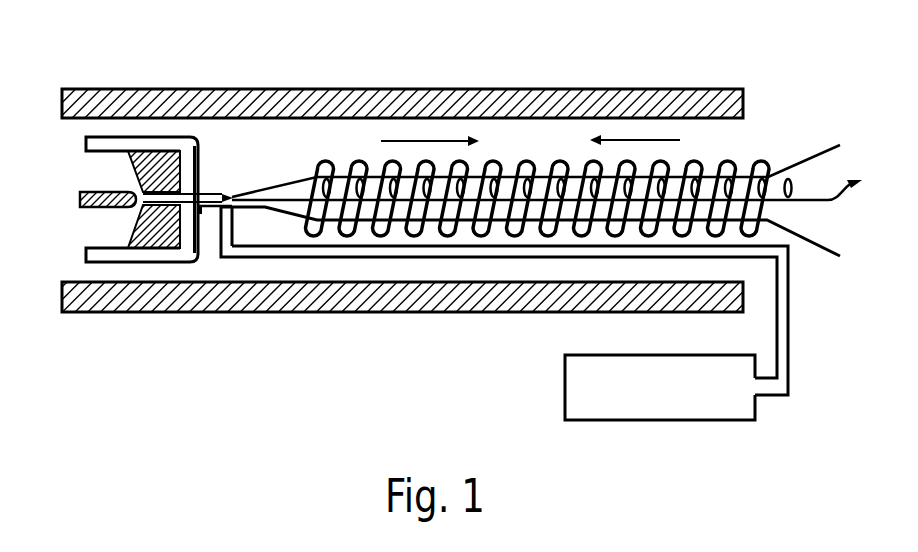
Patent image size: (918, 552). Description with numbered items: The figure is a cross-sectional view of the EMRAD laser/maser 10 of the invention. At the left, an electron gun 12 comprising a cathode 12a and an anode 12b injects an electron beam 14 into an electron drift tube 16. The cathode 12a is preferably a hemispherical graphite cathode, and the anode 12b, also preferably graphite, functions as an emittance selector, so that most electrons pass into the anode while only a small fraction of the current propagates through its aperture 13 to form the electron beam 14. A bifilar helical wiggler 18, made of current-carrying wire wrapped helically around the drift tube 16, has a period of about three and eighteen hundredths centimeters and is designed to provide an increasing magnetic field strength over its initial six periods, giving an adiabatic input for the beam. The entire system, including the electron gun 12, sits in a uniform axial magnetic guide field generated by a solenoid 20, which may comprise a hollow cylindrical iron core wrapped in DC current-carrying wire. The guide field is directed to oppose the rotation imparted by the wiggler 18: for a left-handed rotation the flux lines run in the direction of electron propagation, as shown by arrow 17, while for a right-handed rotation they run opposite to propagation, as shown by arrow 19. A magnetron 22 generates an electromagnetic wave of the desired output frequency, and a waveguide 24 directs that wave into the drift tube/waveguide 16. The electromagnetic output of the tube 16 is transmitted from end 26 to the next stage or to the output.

The electron beam device (gyrotron-type microwave generator) 10 is at (407, 43).
The electron gun 12 is at (203, 160).
The cathode 12a is at (78, 200).
The anode 12b is at (130, 171).
The aperture 13 is at (203, 215).
The electron beam 14 is at (234, 199).
The electron drift tube 16 is at (315, 176).
The arrow 17 is at (383, 142).
The bifilar helical wiggler 18 is at (761, 163).
The arrow 19 is at (678, 142).
The solenoid 20 is at (162, 88).
The magnetron 22 is at (757, 403).
The waveguide 24 is at (792, 305).
The end 26 is at (805, 160).